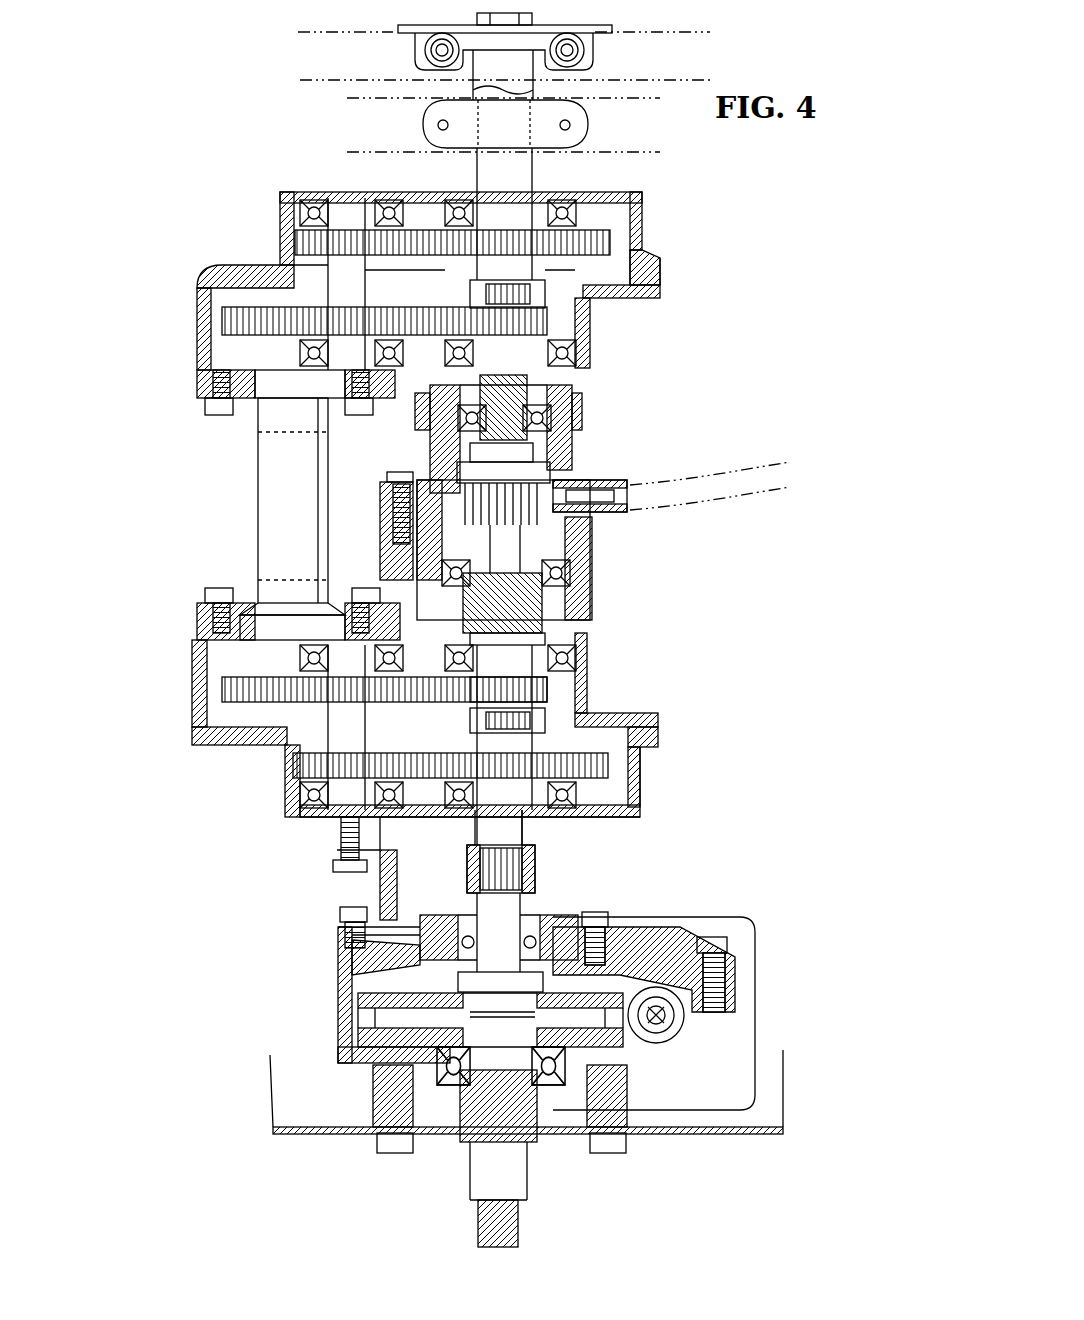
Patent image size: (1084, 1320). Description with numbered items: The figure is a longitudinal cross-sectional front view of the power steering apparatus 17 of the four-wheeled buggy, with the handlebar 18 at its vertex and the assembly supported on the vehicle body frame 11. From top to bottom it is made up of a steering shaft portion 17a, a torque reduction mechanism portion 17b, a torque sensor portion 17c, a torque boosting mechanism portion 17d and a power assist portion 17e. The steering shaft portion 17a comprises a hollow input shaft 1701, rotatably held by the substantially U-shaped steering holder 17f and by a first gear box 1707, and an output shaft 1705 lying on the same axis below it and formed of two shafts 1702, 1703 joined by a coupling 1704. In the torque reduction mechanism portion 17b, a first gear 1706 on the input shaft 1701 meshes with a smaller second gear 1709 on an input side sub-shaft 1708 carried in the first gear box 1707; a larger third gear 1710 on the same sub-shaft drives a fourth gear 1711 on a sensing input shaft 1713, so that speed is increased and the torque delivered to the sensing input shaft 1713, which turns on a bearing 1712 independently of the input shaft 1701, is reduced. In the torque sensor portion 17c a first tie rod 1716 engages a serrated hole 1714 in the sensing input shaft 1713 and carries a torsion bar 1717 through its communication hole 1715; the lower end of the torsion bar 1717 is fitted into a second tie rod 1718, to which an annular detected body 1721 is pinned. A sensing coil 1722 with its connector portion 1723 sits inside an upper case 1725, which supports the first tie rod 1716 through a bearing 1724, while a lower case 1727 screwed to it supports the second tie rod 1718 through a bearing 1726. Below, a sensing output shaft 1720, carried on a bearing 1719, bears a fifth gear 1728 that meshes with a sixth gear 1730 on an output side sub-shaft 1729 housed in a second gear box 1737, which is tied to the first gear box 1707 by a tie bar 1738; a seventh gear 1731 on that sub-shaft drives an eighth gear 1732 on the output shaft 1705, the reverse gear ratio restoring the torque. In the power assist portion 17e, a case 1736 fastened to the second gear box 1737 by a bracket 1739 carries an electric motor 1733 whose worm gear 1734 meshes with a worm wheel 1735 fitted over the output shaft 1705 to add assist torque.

The power steering apparatus 17 is at (250, 158).
The handlebar 18 is at (345, 30).
The vehicle body frame 11 is at (395, 97).
The steering shaft portion 17a is at (468, 172).
The steering holder 17f is at (590, 125).
The input shaft 1701 is at (535, 168).
The torque reduction mechanism portion 17b is at (215, 372).
The second gear 1709 is at (345, 232).
The input side sub-shaft 1708 is at (327, 287).
The first gear 1706 is at (608, 243).
The first gear box 1707 is at (662, 272).
The third gear 1710 is at (225, 322).
The bearing 1712 is at (548, 293).
The fourth gear 1711 is at (548, 325).
The torque sensor portion 17c is at (378, 540).
The serrated hole 1714 is at (560, 404).
The sensing input shaft 1713 is at (562, 378).
The communication hole 1715 is at (575, 445).
The first tie rod 1716 is at (437, 425).
The upper case 1725 is at (560, 417).
The bearing 1724 is at (432, 448).
The sensing coil 1722 is at (590, 470).
The connector portion 1723 is at (600, 500).
The detected body 1721 is at (555, 530).
The torsion bar 1717 is at (560, 570).
The lower case 1727 is at (545, 592).
The bearing 1726 is at (540, 626).
The tie bar 1738 is at (270, 528).
The torque boosting mechanism portion 17d is at (292, 822).
The second tie rod 1718 is at (548, 655).
The output side sub-shaft 1729 is at (320, 723).
The sixth gear 1730 is at (230, 680).
The sensing output shaft 1720 is at (548, 688).
The fifth gear 1728 is at (548, 715).
The seventh gear 1731 is at (300, 760).
The bearing 1719 is at (640, 753).
The second gear box 1737 is at (645, 768).
The eighth gear 1732 is at (600, 818).
The bracket 1739 is at (385, 886).
The output shaft 1705 is at (683, 832).
The shaft 1702 is at (513, 813).
The coupling 1704 is at (535, 867).
The shaft 1703 is at (515, 920).
The power assist portion 17e is at (762, 975).
The case 1736 is at (352, 937).
The worm wheel 1735 is at (370, 1013).
The worm gear 1734 is at (665, 1015).
The electric motor 1733 is at (733, 1091).